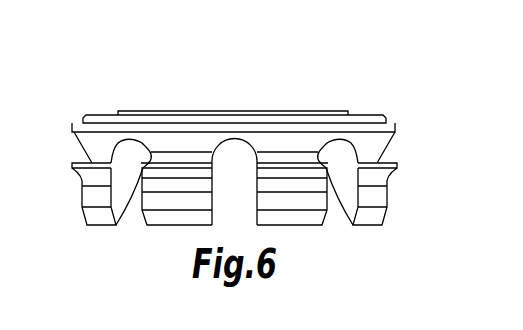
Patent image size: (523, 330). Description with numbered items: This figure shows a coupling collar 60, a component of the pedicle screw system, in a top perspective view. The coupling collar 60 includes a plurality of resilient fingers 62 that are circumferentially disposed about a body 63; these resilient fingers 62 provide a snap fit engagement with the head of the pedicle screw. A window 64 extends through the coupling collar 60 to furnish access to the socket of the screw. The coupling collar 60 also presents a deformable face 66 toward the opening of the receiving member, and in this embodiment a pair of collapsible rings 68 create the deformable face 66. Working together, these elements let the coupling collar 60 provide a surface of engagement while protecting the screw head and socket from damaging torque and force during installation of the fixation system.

The coupling collar 60 is at (314, 95).
The resilient fingers 62 is at (390, 203).
The body 63 is at (89, 138).
The window 64 is at (156, 111).
The deformable face 66 is at (288, 111).
The collapsible rings 68 is at (212, 111).